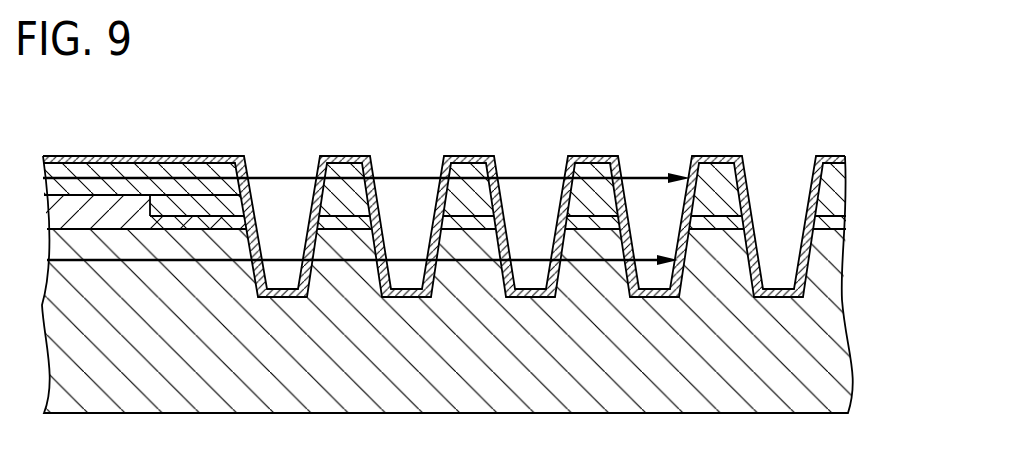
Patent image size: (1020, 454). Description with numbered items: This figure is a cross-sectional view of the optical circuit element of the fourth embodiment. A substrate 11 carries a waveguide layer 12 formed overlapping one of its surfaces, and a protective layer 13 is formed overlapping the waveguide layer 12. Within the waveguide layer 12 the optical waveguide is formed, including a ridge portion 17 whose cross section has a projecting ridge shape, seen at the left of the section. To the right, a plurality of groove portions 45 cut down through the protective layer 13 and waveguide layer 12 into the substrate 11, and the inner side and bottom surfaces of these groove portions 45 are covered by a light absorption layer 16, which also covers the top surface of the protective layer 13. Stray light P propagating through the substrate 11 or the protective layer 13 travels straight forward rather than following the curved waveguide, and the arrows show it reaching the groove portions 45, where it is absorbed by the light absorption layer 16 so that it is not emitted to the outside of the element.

The substrate 11 is at (828, 352).
The waveguide layer 12 is at (839, 221).
The protective layer 13 is at (832, 185).
The light absorption layer 16 is at (80, 158).
The ridge portion 17 is at (125, 203).
The groove portion 45 is at (283, 153).
The stray light P is at (192, 178).